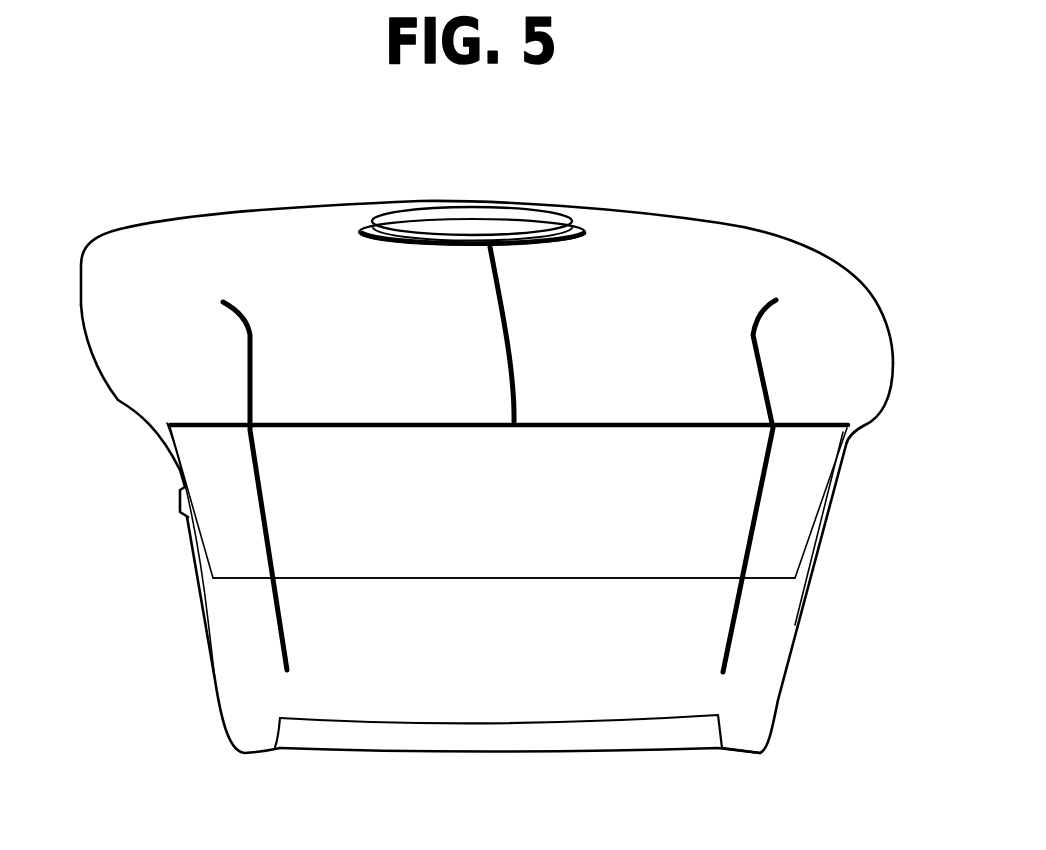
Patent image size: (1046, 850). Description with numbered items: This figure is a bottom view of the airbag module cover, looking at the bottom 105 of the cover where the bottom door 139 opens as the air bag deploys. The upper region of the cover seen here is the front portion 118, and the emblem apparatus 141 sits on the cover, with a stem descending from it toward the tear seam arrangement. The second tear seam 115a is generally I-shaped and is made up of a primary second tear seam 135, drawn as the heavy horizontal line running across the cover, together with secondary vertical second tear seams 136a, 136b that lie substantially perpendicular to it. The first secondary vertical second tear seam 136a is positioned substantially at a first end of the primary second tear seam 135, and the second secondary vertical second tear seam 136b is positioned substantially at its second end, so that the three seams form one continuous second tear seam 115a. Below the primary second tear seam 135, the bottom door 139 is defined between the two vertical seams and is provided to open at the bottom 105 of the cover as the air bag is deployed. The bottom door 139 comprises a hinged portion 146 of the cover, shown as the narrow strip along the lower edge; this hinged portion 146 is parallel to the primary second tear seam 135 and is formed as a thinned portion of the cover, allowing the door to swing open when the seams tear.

The front portion 118 is at (335, 290).
The emblem apparatus 141 is at (448, 218).
The primary second tear seam 135 is at (578, 422).
The bottom door 139 is at (612, 510).
The first secondary vertical second tear seam 136a is at (750, 560).
The second secondary vertical second tear seam 136b is at (253, 502).
The bottom 105 is at (330, 530).
The second tear seam 115a is at (425, 427).
The hinged portion 146 is at (510, 645).